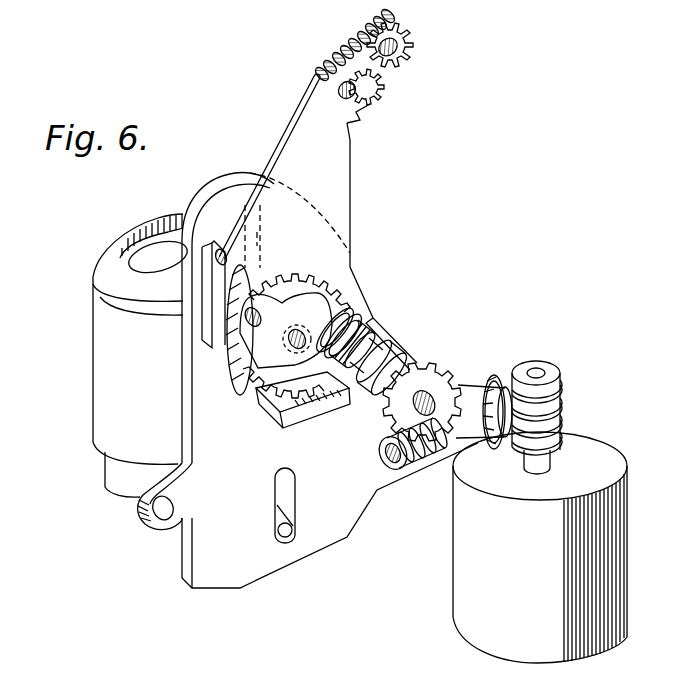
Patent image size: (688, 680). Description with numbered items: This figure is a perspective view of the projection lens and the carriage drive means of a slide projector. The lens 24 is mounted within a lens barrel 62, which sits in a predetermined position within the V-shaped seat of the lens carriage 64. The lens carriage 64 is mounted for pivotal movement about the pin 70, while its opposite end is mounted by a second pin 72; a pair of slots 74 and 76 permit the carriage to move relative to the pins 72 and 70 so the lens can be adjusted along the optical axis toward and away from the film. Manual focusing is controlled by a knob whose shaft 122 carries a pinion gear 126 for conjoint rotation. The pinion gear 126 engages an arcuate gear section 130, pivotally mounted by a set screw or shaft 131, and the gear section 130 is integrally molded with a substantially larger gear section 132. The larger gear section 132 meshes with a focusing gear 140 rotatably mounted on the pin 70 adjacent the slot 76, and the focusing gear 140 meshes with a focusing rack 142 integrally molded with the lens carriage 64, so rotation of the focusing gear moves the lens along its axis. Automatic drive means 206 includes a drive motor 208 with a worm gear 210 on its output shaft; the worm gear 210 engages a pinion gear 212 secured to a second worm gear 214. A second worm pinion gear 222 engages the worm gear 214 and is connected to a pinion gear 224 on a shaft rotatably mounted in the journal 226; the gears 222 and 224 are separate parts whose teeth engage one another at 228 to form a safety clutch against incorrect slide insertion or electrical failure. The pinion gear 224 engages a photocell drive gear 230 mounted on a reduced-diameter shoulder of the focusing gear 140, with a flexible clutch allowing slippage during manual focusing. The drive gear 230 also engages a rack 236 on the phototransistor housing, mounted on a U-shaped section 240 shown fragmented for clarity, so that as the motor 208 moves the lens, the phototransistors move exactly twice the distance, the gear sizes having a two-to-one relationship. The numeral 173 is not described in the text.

The lens 24 is at (170, 269).
The lens barrel 62 is at (160, 388).
The lens carriage 64 is at (215, 508).
The pin 70 is at (330, 316).
The second pin 72 is at (287, 538).
The slot 74 is at (297, 502).
The slot 76 is at (262, 242).
The shaft 122 is at (400, 45).
The pinion gear 126 is at (407, 30).
The arcuate gear section 130 is at (378, 82).
The shaft 131 is at (371, 110).
The larger gear section 132 is at (343, 155).
The focusing gear 140 is at (242, 350).
The focusing rack 142 is at (214, 200).
The mounting lug 173 is at (140, 510).
The drive means 206 is at (540, 352).
The drive motor 208 is at (590, 443).
The worm gear 210 is at (563, 396).
The pinion gear 212 is at (490, 380).
The second worm gear 214 is at (433, 466).
The second worm pinion gear 222 is at (420, 368).
The pinion gear 224 is at (378, 336).
The journal 226 is at (402, 343).
The safety clutch teeth 228 is at (441, 352).
The photocell drive gear 230 is at (322, 318).
The rack 236 is at (268, 397).
The U-shaped section 240 is at (291, 422).